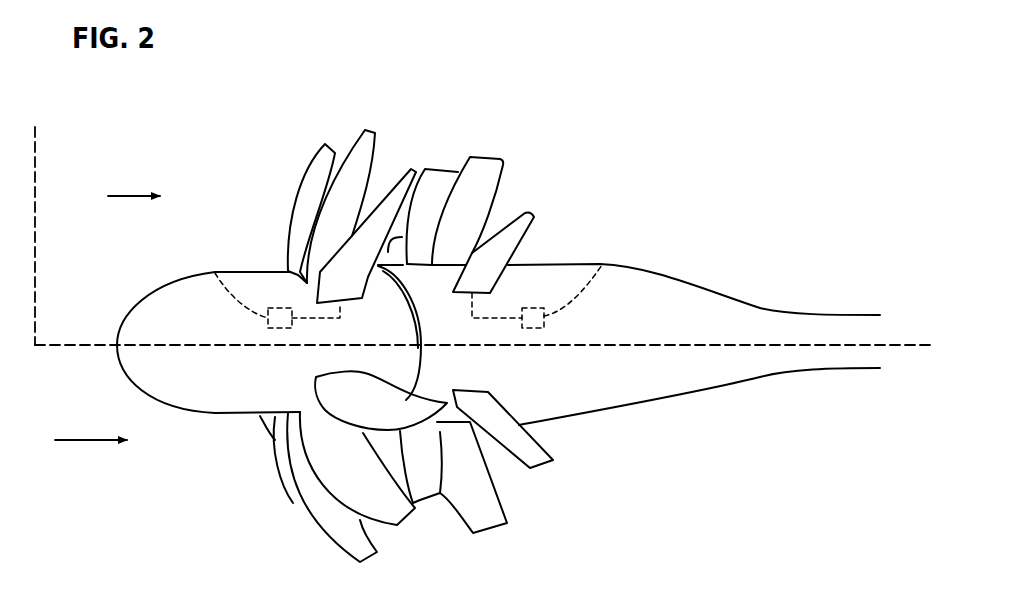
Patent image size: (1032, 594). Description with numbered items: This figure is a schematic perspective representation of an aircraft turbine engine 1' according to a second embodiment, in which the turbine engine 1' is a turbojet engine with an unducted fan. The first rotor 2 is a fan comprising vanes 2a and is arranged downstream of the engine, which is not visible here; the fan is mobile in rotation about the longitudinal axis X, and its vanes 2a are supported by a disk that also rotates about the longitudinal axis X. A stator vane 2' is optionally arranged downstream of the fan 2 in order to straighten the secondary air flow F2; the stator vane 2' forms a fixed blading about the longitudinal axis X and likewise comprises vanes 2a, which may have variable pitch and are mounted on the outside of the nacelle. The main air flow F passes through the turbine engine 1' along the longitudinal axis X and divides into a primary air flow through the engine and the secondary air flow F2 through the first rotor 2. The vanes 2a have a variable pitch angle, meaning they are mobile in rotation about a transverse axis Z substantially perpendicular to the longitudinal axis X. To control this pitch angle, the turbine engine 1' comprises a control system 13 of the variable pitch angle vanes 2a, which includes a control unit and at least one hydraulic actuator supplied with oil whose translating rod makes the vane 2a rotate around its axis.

The turbine engine 1' is at (498, 262).
The first rotor 2 is at (338, 341).
The stator vane 2' is at (487, 336).
The vanes 2a is at (312, 252).
The control system 13 is at (215, 273).
The transverse axis Z is at (35, 180).
The longitudinal axis X is at (35, 345).
The secondary air flow F2 is at (133, 193).
The main air flow F is at (91, 459).